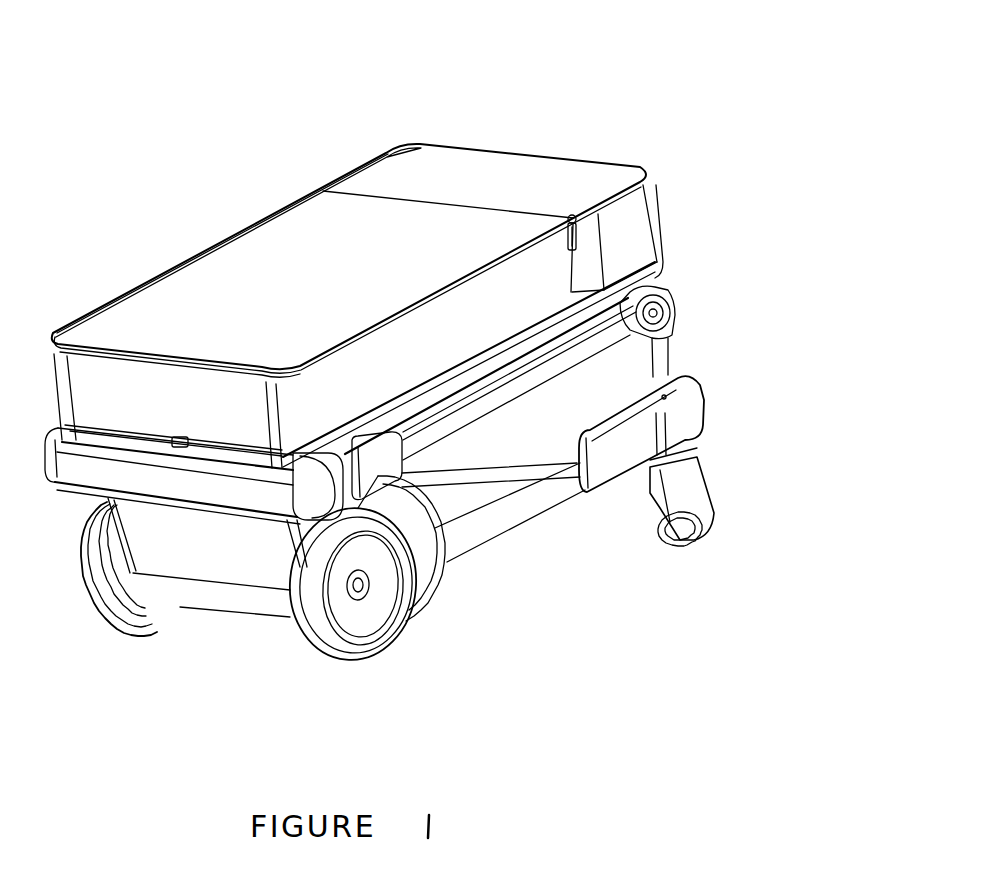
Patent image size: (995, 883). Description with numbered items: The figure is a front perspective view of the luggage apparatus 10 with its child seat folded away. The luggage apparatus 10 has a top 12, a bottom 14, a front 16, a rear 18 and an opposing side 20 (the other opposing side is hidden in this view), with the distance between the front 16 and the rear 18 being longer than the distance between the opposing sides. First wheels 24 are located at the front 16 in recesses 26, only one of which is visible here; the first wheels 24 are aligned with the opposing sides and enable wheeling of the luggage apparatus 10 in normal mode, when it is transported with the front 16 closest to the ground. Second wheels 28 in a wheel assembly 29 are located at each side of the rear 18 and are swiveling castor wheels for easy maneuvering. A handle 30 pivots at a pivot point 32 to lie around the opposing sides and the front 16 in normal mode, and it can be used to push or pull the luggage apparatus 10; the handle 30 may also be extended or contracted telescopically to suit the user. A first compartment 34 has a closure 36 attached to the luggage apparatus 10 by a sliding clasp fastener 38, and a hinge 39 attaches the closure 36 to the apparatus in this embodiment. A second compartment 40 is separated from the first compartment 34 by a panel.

The luggage apparatus 10 is at (173, 97).
The top 12 is at (223, 265).
The bottom 14 is at (510, 533).
The front 16 is at (237, 573).
The rear 18 is at (545, 152).
The opposing side 20 is at (450, 380).
The first wheels 24 is at (397, 623).
The recesses 26 is at (413, 533).
The second wheels 28 is at (683, 543).
The wheel assembly 29 is at (690, 477).
The handle 30 is at (70, 475).
The pivot point 32 is at (670, 307).
The first compartment 34 is at (632, 227).
The closure 36 is at (300, 267).
The sliding clasp fastener 38 is at (107, 300).
The hinge 39 is at (517, 213).
The second compartment 40 is at (633, 367).